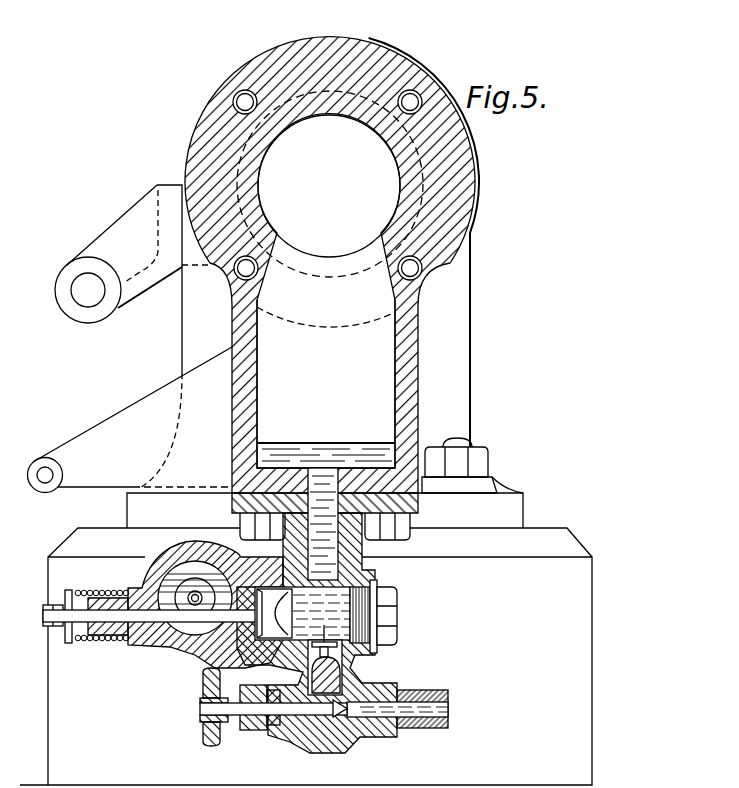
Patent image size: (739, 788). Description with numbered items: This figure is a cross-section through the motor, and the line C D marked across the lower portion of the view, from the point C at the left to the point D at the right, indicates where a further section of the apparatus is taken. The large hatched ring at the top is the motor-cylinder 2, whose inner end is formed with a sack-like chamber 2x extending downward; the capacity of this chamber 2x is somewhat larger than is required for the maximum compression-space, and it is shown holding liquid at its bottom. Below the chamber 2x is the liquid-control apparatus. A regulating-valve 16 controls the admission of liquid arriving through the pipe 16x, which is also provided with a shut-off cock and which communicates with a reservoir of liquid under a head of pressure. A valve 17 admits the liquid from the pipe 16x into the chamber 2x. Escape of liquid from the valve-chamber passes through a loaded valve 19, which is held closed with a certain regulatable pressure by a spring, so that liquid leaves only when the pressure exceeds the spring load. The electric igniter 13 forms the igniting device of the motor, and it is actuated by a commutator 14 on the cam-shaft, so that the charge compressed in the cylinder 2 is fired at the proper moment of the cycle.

The motor-cylinder 2 is at (332, 265).
The sack-like chamber 2x is at (326, 384).
The loaded valve 19 is at (185, 604).
The section line C D C is at (43, 615).
The electric igniter 13 is at (302, 613).
The commutator 14 is at (274, 613).
The liquid-admission valve 17 is at (326, 660).
The regulating-valve 16 is at (345, 690).
The liquid-supply pipe 16x is at (436, 709).
The section line C D is at (378, 615).